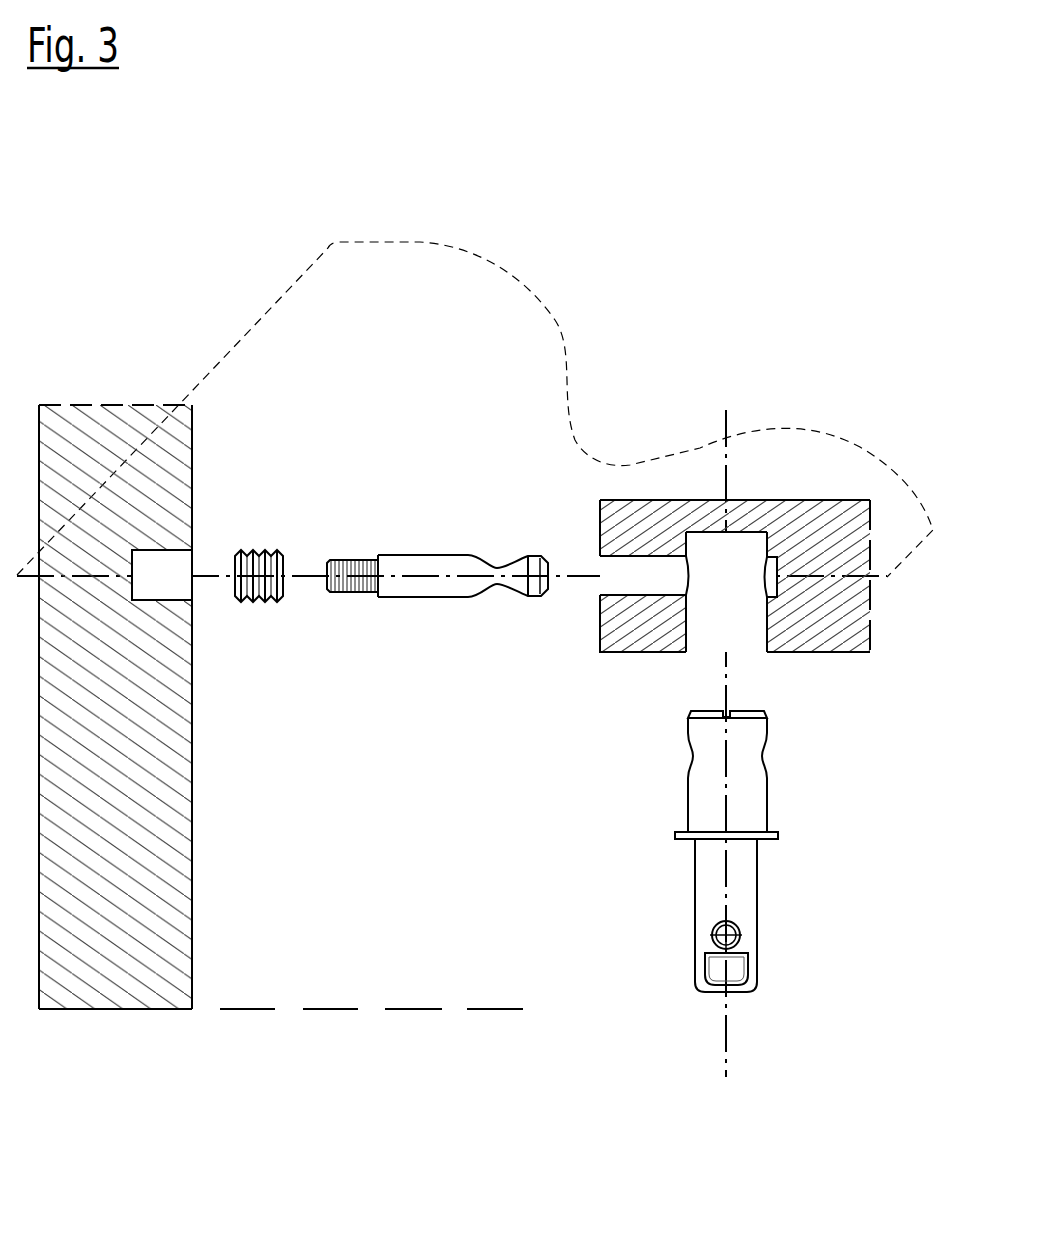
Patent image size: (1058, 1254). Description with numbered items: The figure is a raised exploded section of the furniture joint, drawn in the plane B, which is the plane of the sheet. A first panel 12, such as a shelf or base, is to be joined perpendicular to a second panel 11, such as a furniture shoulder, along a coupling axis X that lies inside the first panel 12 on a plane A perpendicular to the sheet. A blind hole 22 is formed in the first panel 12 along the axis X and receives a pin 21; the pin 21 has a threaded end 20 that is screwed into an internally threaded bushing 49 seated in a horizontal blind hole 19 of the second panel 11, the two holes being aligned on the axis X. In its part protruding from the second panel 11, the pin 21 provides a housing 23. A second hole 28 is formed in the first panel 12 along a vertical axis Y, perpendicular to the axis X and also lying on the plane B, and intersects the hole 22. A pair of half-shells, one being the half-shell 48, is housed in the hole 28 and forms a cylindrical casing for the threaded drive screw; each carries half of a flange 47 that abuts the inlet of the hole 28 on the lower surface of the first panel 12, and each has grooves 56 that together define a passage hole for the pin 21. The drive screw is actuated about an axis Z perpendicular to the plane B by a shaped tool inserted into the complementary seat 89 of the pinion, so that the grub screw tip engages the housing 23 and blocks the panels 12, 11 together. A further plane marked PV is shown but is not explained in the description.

The second panel 11 is at (151, 629).
The blind hole 19 is at (188, 599).
The internally threaded bushing 49 is at (256, 553).
The threaded end 20 is at (437, 557).
The pin 21 is at (427, 557).
The housing 23 is at (503, 581).
The first panel 12 is at (720, 563).
The blind hole 22 is at (617, 595).
The second hole 28 is at (718, 534).
The flange 47 is at (728, 864).
The half-shell 48 is at (726, 797).
The grooves 56 is at (688, 755).
The complementary seat 89 is at (737, 937).
The plane A is at (542, 403).
The plane B is at (380, 825).
The coupling axis X is at (565, 577).
The axis Y is at (726, 675).
The actuation axis Z is at (712, 943).
The reference plane PV is at (258, 1007).